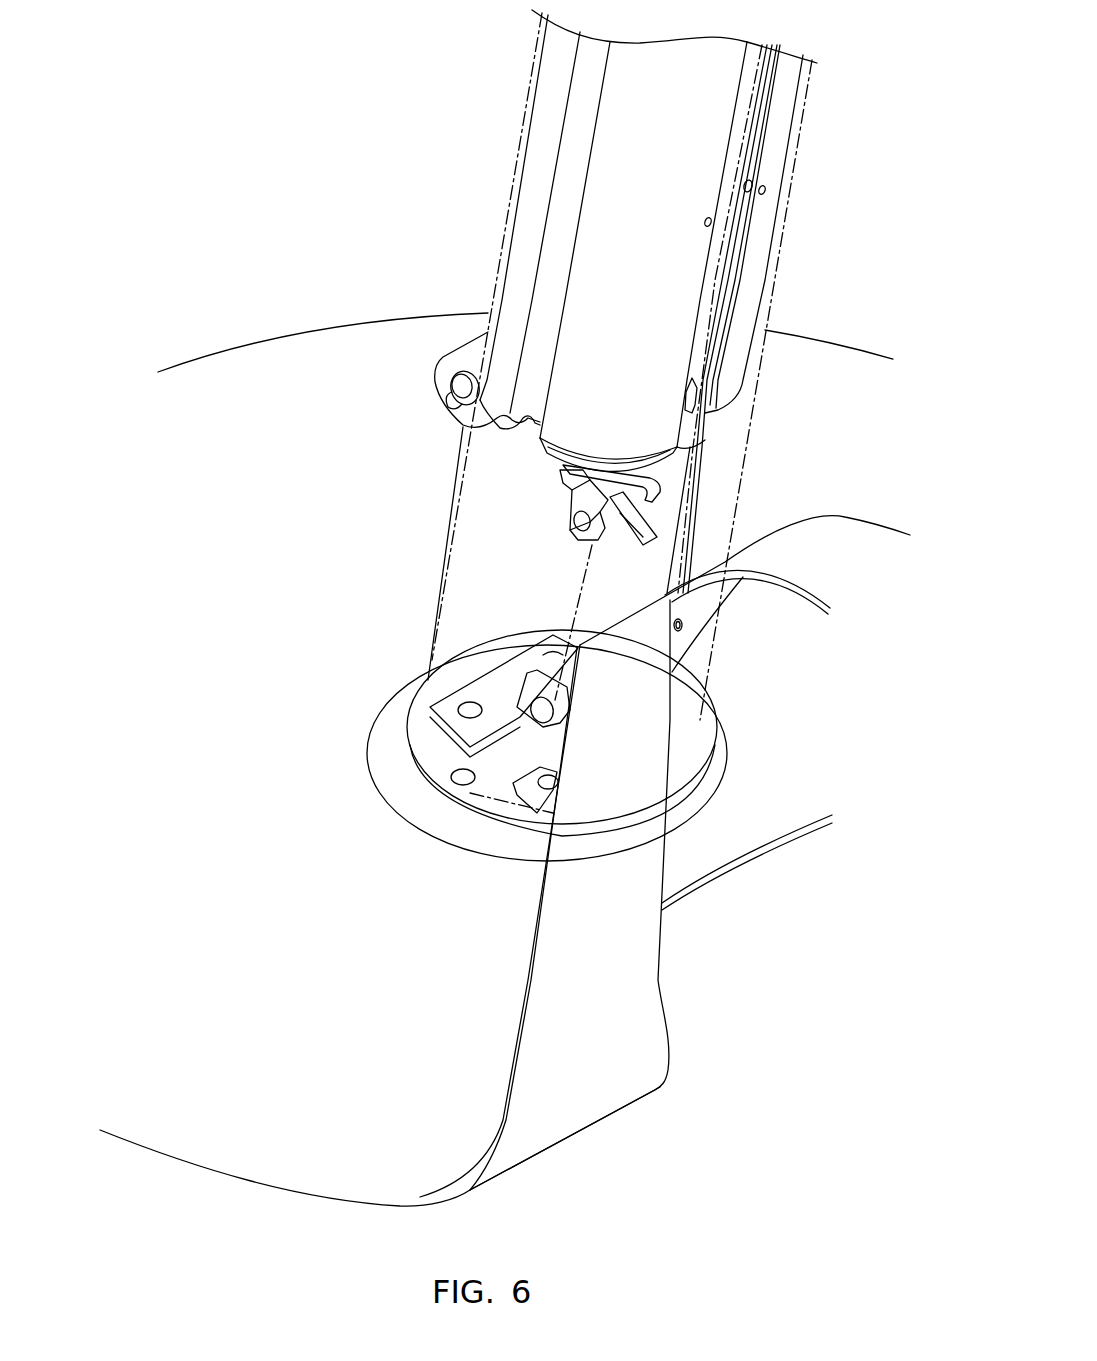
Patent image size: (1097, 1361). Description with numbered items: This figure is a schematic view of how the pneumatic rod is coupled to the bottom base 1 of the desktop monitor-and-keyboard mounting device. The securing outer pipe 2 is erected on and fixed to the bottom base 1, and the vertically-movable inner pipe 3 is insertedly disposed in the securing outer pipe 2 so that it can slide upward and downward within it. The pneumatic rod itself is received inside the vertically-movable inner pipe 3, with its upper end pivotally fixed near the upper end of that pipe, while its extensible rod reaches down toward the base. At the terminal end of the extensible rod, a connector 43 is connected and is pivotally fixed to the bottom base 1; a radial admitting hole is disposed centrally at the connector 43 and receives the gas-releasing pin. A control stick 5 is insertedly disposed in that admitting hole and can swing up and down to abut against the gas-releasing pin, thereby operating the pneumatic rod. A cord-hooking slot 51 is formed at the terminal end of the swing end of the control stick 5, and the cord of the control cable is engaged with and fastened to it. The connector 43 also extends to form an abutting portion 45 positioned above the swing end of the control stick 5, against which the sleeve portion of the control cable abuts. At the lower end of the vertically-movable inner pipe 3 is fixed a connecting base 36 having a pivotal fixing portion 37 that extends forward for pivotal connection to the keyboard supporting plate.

The bottom base 1 is at (325, 387).
The securing outer pipe 2 is at (455, 503).
The vertically-movable inner pipe 3 is at (557, 97).
The pivotal fixing portion 37 is at (463, 343).
The connecting base 36 is at (677, 452).
The abutting portion 45 is at (660, 484).
The connector 43 is at (570, 533).
The cord-hooking slot 51 is at (652, 524).
The control stick 5 is at (620, 525).